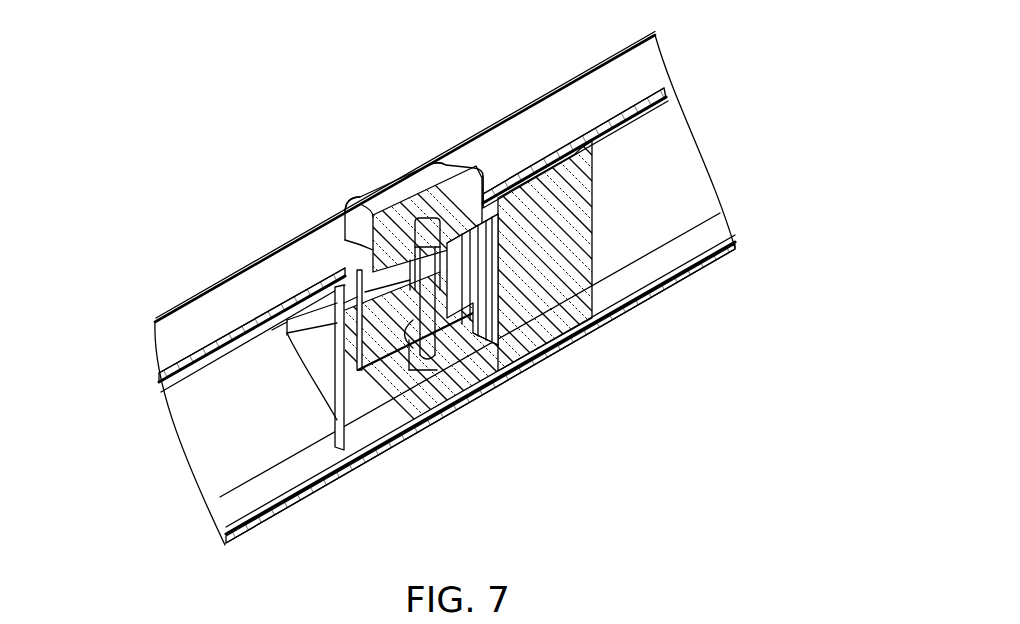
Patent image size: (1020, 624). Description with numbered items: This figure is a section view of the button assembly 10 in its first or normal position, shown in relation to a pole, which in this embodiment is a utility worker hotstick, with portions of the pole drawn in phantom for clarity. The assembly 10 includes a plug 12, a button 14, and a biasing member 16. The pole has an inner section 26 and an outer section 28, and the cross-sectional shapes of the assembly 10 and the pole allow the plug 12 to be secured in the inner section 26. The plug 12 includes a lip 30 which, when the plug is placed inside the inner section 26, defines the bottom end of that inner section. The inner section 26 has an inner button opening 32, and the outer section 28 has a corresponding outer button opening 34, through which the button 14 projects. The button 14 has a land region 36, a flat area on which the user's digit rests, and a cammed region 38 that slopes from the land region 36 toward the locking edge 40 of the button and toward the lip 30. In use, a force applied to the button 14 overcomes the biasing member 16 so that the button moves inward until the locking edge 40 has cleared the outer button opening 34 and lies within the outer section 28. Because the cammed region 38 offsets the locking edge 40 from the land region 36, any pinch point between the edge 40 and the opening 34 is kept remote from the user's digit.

The button assembly 10 is at (622, 210).
The plug 12 is at (379, 460).
The button 14 is at (338, 160).
The biasing member 16 is at (450, 303).
The inner section 26 is at (231, 348).
The outer section 28 is at (612, 77).
The lip 30 is at (591, 318).
The inner button opening 32 is at (367, 268).
The outer button opening 34 is at (345, 228).
The land region 36 is at (402, 190).
The cammed region 38 is at (447, 161).
The locking edge 40 is at (482, 178).